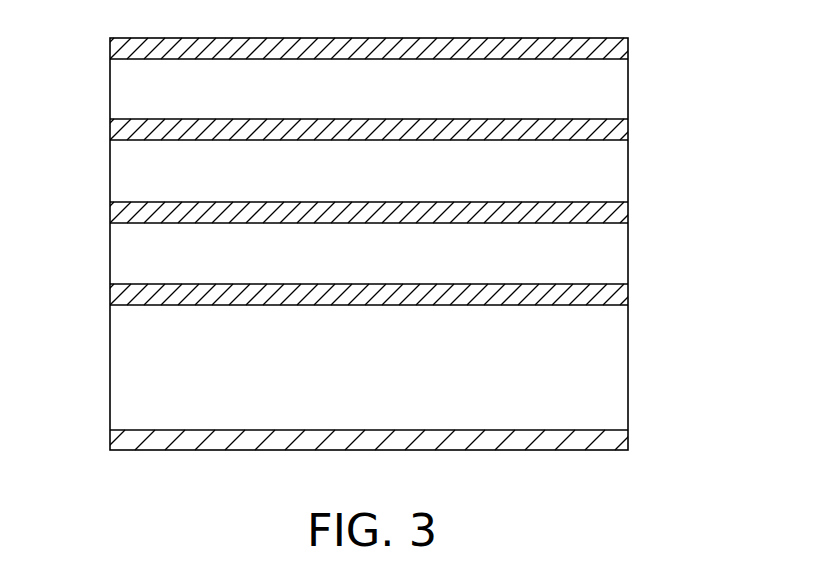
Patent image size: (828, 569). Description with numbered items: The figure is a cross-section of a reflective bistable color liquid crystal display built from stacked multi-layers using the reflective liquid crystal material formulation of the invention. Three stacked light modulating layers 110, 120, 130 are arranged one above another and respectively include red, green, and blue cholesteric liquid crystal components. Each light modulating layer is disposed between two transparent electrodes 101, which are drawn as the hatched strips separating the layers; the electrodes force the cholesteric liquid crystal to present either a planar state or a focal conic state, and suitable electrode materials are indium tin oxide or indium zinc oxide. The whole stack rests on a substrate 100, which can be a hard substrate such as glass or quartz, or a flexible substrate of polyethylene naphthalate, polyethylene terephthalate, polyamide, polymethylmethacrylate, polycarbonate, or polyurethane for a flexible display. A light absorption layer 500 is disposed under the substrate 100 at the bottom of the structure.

The substrate 100 is at (629, 363).
The transparent electrodes 101 is at (629, 44).
The light modulating layer 110 is at (110, 258).
The light modulating layer 120 is at (110, 177).
The light modulating layer 130 is at (110, 93).
The light absorption layer 500 is at (629, 438).